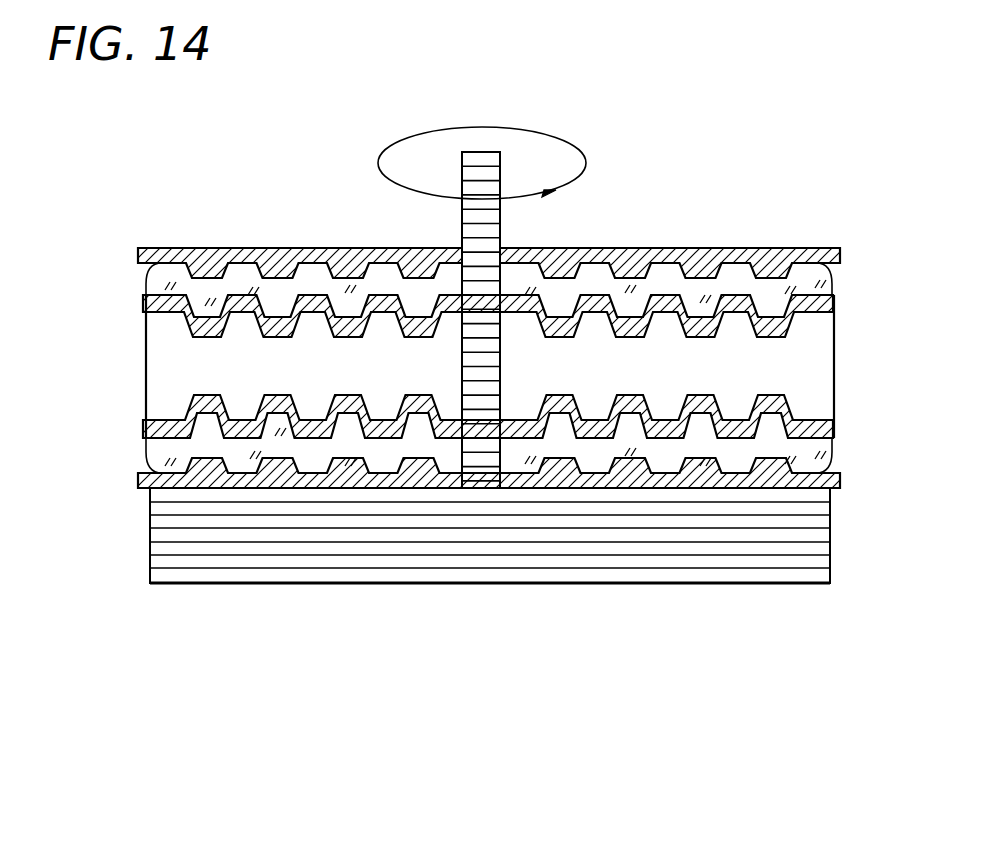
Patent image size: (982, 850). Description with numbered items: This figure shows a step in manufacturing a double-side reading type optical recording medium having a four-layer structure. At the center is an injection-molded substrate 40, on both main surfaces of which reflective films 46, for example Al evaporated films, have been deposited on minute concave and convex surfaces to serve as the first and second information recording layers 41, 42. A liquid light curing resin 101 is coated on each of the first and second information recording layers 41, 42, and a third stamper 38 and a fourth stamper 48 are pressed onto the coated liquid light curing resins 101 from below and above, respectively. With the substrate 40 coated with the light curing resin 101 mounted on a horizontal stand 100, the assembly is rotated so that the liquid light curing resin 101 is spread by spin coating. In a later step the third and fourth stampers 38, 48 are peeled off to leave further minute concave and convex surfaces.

The third stamper 38 is at (772, 483).
The substrate 40 is at (810, 368).
The first information recording layer 41 is at (192, 402).
The second information recording layer 42 is at (188, 320).
The reflective film 46 is at (447, 407).
The fourth stamper 48 is at (622, 250).
The horizontal stand 100 is at (387, 557).
The liquid light curing resin 101 is at (738, 280).